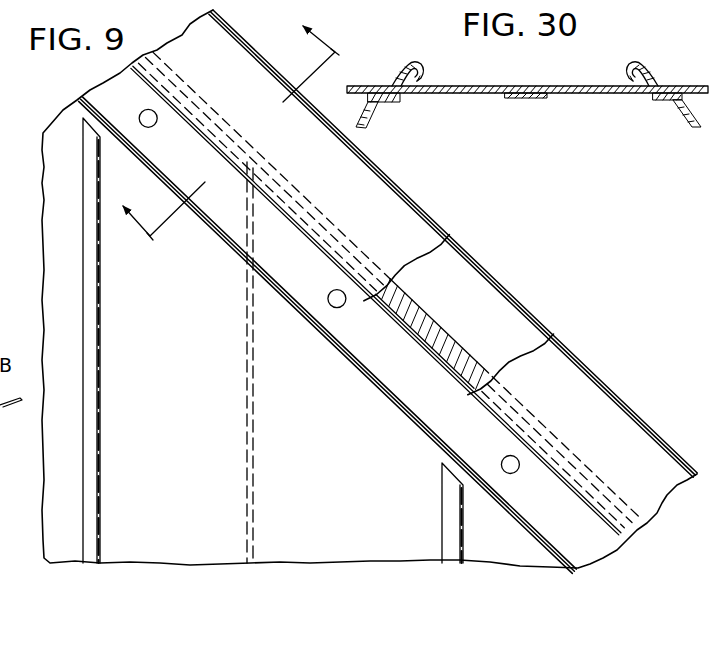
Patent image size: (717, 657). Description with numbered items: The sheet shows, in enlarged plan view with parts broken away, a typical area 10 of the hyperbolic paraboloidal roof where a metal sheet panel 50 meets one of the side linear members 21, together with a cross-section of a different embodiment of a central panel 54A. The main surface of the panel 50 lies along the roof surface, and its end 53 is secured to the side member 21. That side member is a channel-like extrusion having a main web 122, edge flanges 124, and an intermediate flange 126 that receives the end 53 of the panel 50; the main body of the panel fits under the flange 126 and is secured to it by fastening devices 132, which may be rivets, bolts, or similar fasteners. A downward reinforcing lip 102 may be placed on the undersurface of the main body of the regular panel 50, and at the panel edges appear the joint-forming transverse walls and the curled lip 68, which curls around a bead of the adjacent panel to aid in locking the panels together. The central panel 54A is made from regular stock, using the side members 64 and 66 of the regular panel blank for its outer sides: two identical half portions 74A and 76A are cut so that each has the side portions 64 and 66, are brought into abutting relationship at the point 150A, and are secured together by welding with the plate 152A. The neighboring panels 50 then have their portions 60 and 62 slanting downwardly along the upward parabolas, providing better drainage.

In FIG. 9, the direction of panel installation 10 is at (236, 144).
In FIG. 9, the side linear member 21 is at (610, 323).
In FIG. 9, the metal sheet panel 50 is at (197, 552).
In FIG. 30, the metal sheet panel 50 is at (371, 56).
In FIG. 9, the panel end 53 is at (346, 373).
In FIG. 30, the central panel 54A is at (522, 76).
In FIG. 30, the transverse wall part 60 is at (403, 80).
In FIG. 30, the transverse wall part 62 is at (378, 100).
In FIG. 30, the transverse wall part 64 is at (419, 81).
In FIG. 30, the transverse wall part 66 is at (371, 117).
In FIG. 9, the curled lip 68 is at (100, 324).
In FIG. 30, the half portion 74A is at (436, 93).
In FIG. 30, the half portion 76A is at (562, 93).
In FIG. 9, the downward reinforcing lip 102 is at (253, 487).
In FIG. 9, the main web 122 is at (434, 322).
In FIG. 9, the edge flange 124 is at (240, 45).
In FIG. 9, the intermediate flange 126 is at (308, 302).
In FIG. 9, the fastening device 132 is at (152, 127).
In FIG. 30, the abutting point 150A is at (527, 92).
In FIG. 30, the plate 152A is at (530, 99).